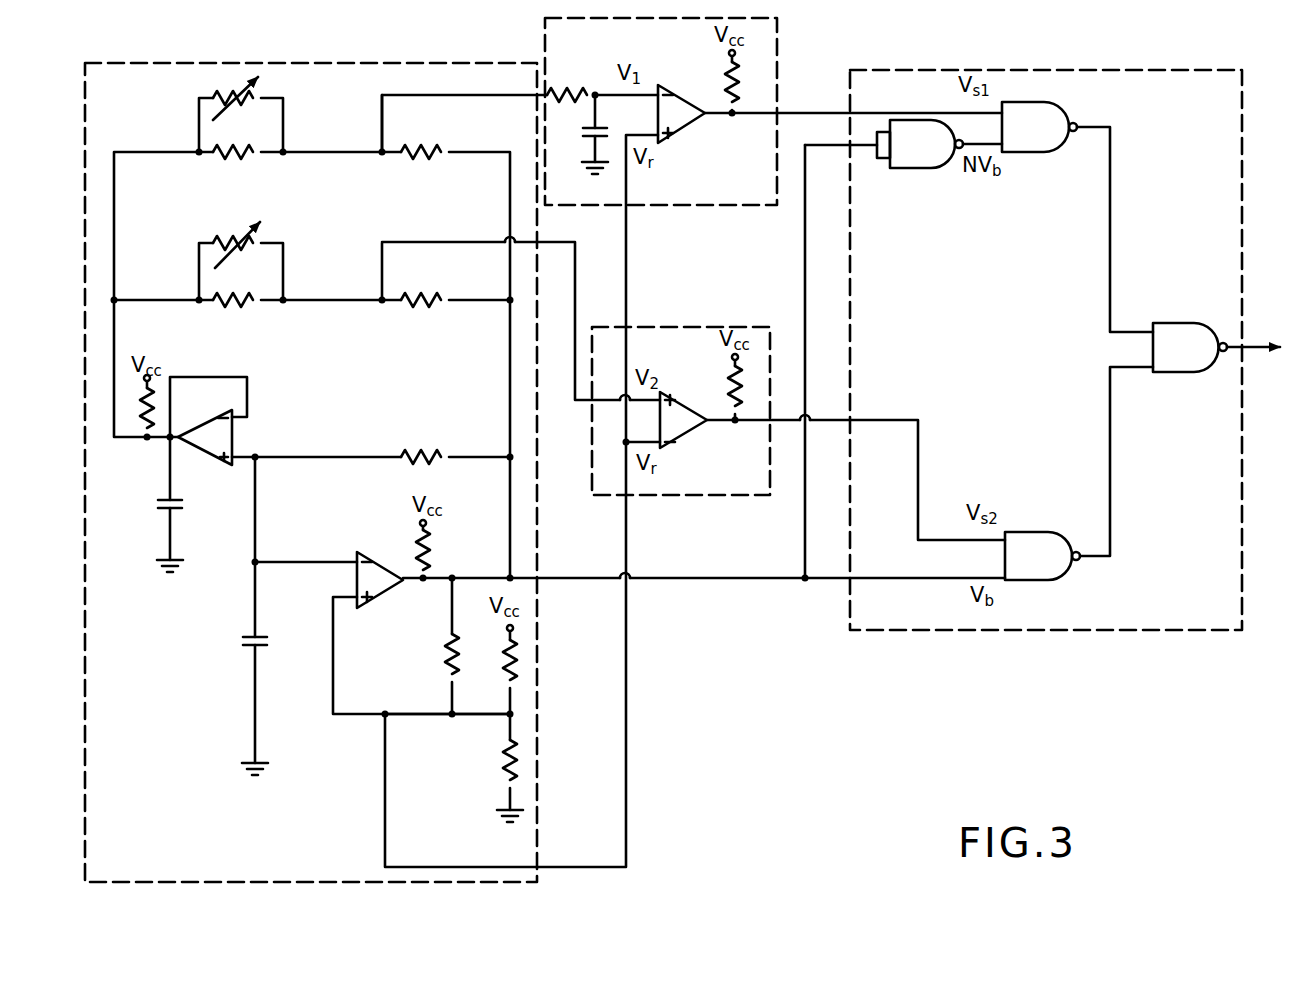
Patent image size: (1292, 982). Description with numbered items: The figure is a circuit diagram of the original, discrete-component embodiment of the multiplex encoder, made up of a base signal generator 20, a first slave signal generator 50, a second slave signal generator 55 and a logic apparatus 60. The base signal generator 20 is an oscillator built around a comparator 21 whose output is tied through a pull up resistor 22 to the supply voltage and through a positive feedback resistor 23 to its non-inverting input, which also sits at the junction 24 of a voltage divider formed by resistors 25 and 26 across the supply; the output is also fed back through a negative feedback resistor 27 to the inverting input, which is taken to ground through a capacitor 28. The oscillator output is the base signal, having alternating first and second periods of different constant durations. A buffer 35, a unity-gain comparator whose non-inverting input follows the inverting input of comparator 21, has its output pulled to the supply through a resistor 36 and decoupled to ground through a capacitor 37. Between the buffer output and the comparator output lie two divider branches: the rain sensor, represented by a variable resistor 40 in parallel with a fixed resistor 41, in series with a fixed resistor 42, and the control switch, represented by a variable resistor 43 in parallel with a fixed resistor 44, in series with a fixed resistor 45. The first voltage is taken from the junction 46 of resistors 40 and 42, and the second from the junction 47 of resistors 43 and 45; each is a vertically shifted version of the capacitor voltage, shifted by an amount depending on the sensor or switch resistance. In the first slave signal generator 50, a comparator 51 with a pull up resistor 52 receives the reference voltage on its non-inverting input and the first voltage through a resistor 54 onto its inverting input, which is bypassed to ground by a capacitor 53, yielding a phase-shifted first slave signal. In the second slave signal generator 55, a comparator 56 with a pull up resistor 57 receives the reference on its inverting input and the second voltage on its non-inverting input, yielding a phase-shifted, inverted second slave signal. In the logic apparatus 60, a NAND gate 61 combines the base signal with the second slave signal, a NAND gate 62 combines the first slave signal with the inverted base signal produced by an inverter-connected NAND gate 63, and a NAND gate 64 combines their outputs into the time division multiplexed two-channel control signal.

The base signal generator 20 is at (362, 60).
The comparator 21 is at (378, 566).
The pull up resistor 22 is at (430, 538).
The positive feedback resistor 23 is at (448, 645).
The junction 24 is at (507, 720).
The resistor 25 is at (502, 656).
The resistor 26 is at (503, 762).
The negative feedback resistor 27 is at (418, 452).
The capacitor 28 is at (245, 636).
The buffer 35 is at (232, 433).
The resistor 36 is at (145, 418).
The capacitor 37 is at (160, 503).
The variable resistor 40 is at (212, 88).
The fixed resistor 41 is at (225, 155).
The fixed resistor 42 is at (420, 158).
The variable resistor 43 is at (258, 240).
The fixed resistor 44 is at (237, 306).
The fixed resistor 45 is at (418, 306).
The junction 46 is at (378, 150).
The junction 47 is at (383, 306).
The first slave signal generator 50 is at (782, 62).
The comparator 51 is at (694, 102).
The pull up resistor 52 is at (712, 112).
The capacitor 53 is at (578, 134).
The resistor 54 is at (565, 88).
The second slave signal generator 55 is at (706, 324).
The comparator 56 is at (682, 428).
The pull up resistor 57 is at (728, 396).
The logic apparatus 60 is at (964, 68).
The NAND gate 61 is at (1035, 540).
The NAND gate 62 is at (1052, 106).
The NAND gate 63 is at (922, 155).
The NAND gate 64 is at (1170, 332).